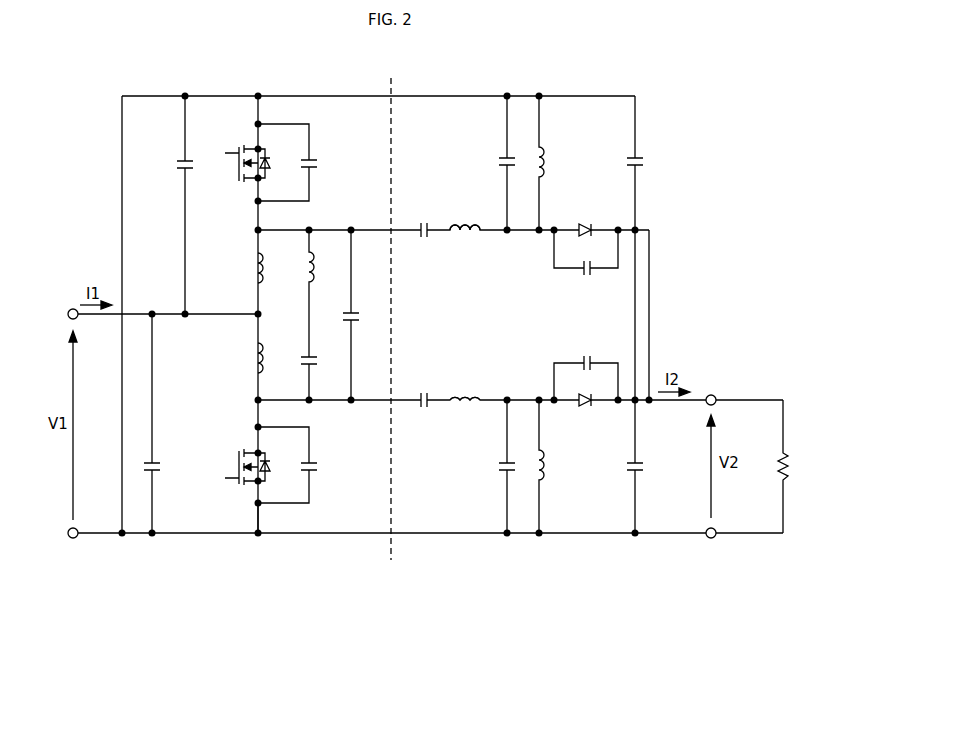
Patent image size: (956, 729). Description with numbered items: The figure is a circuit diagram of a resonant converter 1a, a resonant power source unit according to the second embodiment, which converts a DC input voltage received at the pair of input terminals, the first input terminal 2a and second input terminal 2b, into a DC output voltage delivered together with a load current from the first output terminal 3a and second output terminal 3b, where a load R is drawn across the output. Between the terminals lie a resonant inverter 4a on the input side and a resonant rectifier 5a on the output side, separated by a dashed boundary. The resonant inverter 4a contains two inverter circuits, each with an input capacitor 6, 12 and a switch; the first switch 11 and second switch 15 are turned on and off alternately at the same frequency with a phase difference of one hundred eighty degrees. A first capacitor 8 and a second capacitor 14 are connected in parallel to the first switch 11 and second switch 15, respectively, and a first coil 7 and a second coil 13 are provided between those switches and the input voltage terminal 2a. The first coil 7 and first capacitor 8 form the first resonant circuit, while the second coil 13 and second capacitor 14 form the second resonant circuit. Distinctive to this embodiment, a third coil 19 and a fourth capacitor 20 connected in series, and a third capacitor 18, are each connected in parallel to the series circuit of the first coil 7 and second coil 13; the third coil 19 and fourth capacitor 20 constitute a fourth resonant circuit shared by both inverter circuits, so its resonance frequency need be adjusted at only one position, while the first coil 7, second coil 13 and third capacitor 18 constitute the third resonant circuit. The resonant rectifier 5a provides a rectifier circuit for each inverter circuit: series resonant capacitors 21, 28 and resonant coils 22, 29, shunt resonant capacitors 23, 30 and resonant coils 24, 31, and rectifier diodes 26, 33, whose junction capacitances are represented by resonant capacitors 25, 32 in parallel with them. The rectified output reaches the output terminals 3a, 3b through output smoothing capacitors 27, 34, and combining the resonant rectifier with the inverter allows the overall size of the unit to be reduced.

The resonant converter 1a is at (408, 82).
The first input terminal 2a is at (71, 309).
The second input terminal 2b is at (72, 539).
The first output terminal 3a is at (713, 395).
The second output terminal 3b is at (712, 539).
The resonant inverter 4a is at (258, 538).
The resonant rectifier 5a is at (547, 538).
The input capacitor 6 is at (161, 468).
The first coil 7 is at (265, 358).
The first capacitor 8 is at (303, 462).
The first switch 11 is at (240, 456).
The input capacitor 12 is at (176, 165).
The second coil 13 is at (265, 273).
The second capacitor 14 is at (304, 160).
The second switch 15 is at (240, 153).
The third capacitor 18 is at (360, 316).
The third coil 19 is at (316, 268).
The fourth capacitor 20 is at (318, 359).
The resonant capacitor 21 is at (424, 391).
The resonant coil 22 is at (466, 392).
The resonant capacitor 23 is at (515, 468).
The resonant coil 24 is at (549, 468).
The resonant capacitor 25 is at (587, 355).
The rectifier diode 26 is at (587, 407).
The output smoothing capacitor 27 is at (644, 468).
The resonant capacitor 28 is at (424, 240).
The resonant coil 29 is at (466, 236).
The resonant capacitor 30 is at (515, 165).
The resonant coil 31 is at (549, 164).
The resonant capacitor 32 is at (587, 278).
The rectifier diode 33 is at (585, 223).
The output smoothing capacitor 34 is at (644, 164).
The load resistor R is at (790, 468).